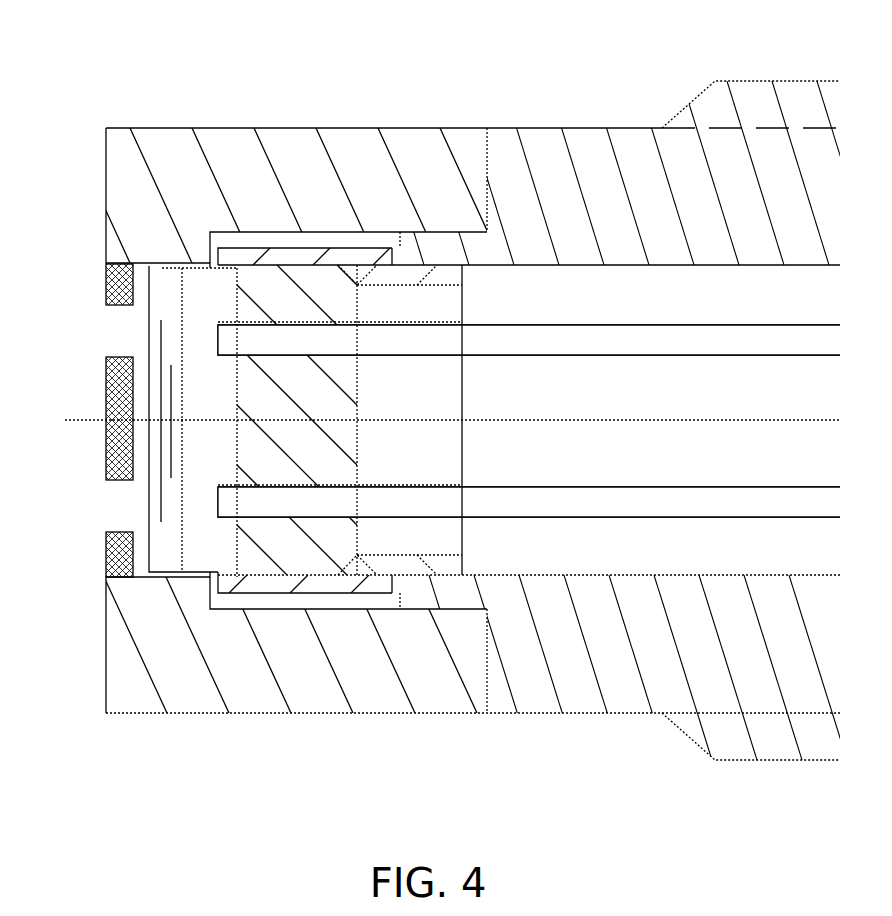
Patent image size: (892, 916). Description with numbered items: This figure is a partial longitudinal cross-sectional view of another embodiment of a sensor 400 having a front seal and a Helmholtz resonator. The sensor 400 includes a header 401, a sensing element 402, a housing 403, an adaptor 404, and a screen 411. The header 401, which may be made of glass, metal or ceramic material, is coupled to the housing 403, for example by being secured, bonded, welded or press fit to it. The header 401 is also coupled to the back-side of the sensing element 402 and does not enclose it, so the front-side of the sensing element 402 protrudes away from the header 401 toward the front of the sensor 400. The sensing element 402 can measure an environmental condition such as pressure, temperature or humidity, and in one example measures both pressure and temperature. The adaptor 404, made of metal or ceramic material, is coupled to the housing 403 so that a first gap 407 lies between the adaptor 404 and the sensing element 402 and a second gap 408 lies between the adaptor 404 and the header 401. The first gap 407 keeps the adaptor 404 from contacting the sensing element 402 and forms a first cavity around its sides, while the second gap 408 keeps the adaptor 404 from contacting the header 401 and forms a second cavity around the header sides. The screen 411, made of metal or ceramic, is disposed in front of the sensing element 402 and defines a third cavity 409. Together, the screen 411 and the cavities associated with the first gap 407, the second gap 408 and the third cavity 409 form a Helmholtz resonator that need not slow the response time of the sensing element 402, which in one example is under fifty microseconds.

The sensor 400 is at (414, 49).
The header 401 is at (271, 427).
The sensing element 402 is at (157, 318).
The housing 403 is at (709, 674).
The adaptor 404 is at (272, 674).
The first gap 407 is at (148, 273).
The second gap 408 is at (266, 224).
The third cavity 409 is at (132, 431).
The screen 411 is at (120, 392).